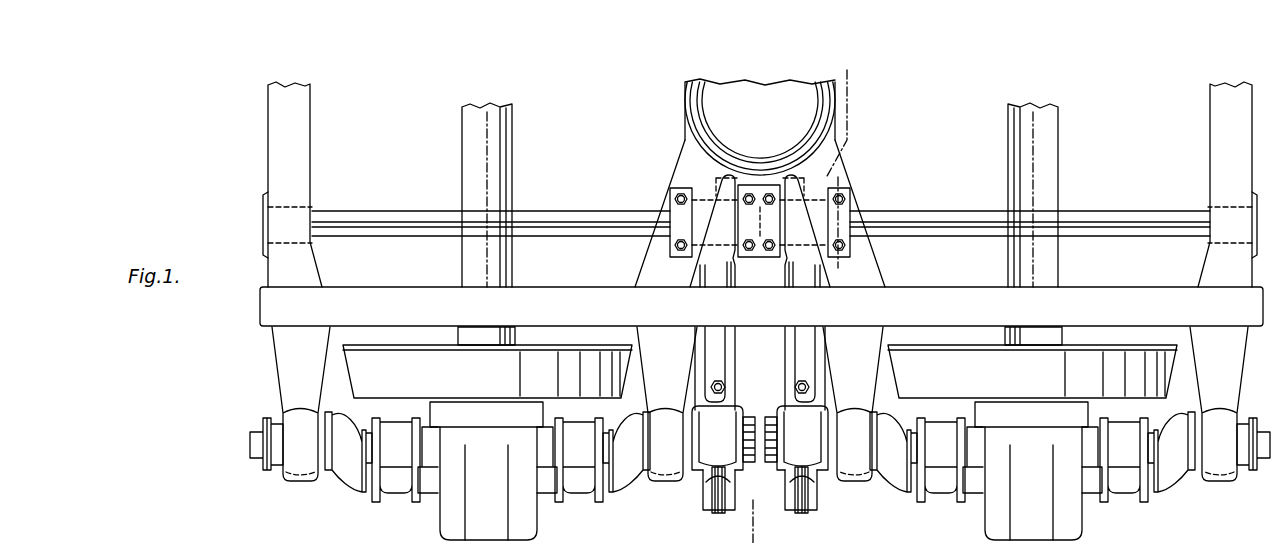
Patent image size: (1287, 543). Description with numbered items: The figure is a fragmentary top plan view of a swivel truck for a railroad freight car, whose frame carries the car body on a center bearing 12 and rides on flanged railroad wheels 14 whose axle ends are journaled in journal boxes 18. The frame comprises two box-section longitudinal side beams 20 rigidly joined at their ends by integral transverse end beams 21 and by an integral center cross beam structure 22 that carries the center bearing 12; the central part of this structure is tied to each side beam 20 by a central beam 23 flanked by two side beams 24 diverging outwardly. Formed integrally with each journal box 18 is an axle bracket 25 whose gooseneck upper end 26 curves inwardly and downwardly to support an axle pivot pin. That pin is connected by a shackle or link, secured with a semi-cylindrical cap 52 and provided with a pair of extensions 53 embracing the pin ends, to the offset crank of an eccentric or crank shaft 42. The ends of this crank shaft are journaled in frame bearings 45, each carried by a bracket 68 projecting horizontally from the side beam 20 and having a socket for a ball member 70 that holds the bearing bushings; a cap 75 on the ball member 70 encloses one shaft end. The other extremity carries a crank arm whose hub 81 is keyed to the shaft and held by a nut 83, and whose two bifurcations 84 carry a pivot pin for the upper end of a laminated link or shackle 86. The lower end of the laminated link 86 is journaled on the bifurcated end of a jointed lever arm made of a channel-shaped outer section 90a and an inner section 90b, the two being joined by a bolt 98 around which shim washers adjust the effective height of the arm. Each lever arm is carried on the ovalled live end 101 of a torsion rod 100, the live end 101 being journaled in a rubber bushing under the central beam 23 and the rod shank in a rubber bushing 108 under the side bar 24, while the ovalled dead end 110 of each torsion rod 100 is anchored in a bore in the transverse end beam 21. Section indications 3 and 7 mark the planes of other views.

The section line 3- 3 is at (745, 538).
The section line 7- 7 is at (838, 177).
The center bearing 12 is at (822, 105).
The flanged railroad wheel 14 is at (392, 362).
The journal box 18 is at (483, 417).
The longitudinal side beam 20 is at (552, 280).
The transverse end beam 21 is at (270, 172).
The center cross beam structure 22 is at (680, 122).
The central beam 23 is at (752, 284).
The side beam of center structure 24 is at (660, 263).
The axle bracket 25 is at (530, 528).
The upper end of axle bracket 26 is at (761, 483).
The eccentric or crank shaft 42 is at (343, 495).
The frame bearing 45 is at (652, 498).
The semi-cylindrical cap 52 is at (432, 495).
The link extension 53 is at (760, 460).
The bracket 68 is at (760, 404).
The ball member 70 is at (240, 118).
The cap 75 is at (466, 121).
The crank arm hub 81 is at (760, 438).
The nut 83 is at (771, 415).
The crank arm bifurcation 84 is at (696, 497).
The laminated link or shackle 86 is at (716, 512).
The outer lever arm section 90a is at (703, 336).
The inner lever arm section 90b is at (718, 288).
The bolt 98 is at (712, 386).
The torsion rod 100 is at (411, 217).
The live end of torsion rod 101 is at (738, 182).
The rubber bushing 108 is at (670, 197).
The dead end of torsion rod 110 is at (302, 207).